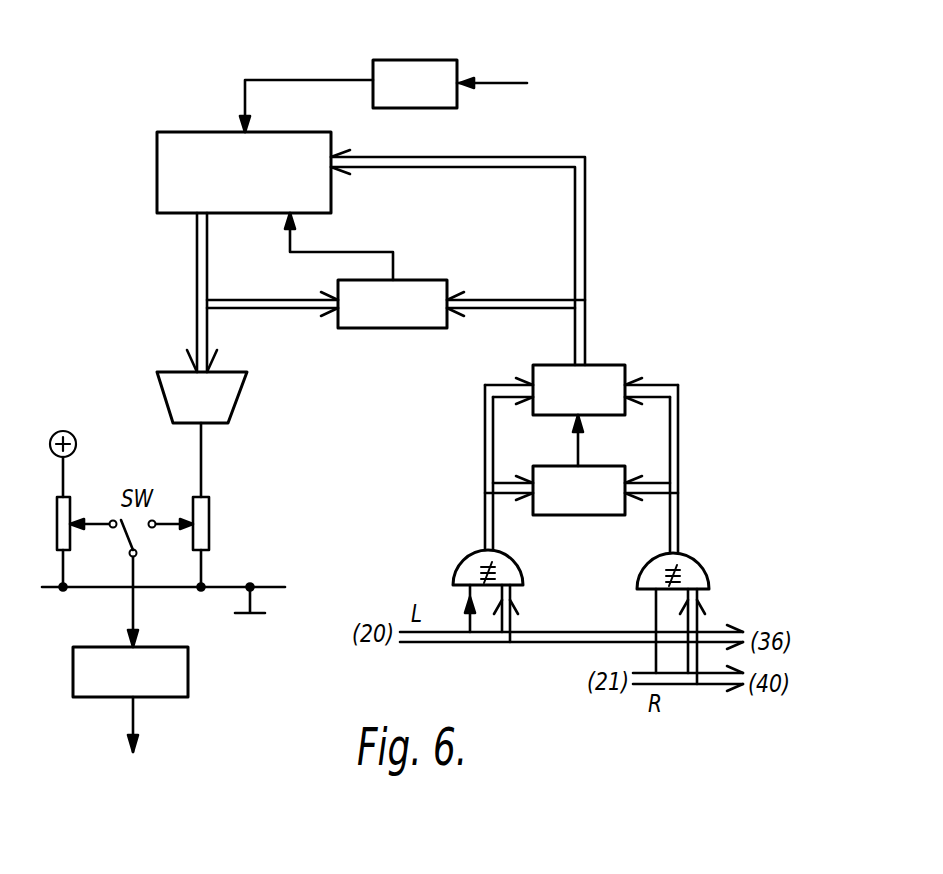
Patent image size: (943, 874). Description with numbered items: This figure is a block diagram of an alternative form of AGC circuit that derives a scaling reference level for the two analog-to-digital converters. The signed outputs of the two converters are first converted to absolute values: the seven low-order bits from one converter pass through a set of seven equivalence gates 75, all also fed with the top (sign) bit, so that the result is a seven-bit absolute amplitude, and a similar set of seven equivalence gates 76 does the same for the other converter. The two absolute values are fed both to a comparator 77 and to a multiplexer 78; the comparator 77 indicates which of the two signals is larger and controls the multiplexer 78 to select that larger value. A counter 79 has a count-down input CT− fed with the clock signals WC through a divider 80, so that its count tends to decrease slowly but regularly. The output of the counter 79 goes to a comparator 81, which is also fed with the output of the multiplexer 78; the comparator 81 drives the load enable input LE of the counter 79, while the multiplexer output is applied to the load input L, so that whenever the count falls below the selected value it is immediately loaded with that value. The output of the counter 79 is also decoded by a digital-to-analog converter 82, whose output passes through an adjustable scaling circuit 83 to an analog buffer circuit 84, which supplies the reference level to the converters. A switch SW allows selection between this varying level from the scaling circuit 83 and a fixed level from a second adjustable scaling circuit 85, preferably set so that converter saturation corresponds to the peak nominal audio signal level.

The equivalence gates 75 is at (458, 560).
The equivalence gates 76 is at (705, 568).
The comparator 77 is at (590, 516).
The multiplexer 78 is at (612, 365).
The counter 79 is at (293, 132).
The divider 80 is at (445, 60).
The comparator 81 is at (437, 280).
The digital-to-analog converter 82 is at (237, 372).
The adjustable scaling circuit 83 is at (209, 537).
The analog buffer circuit 84 is at (188, 672).
The second adjustable scaling circuit 85 is at (70, 537).